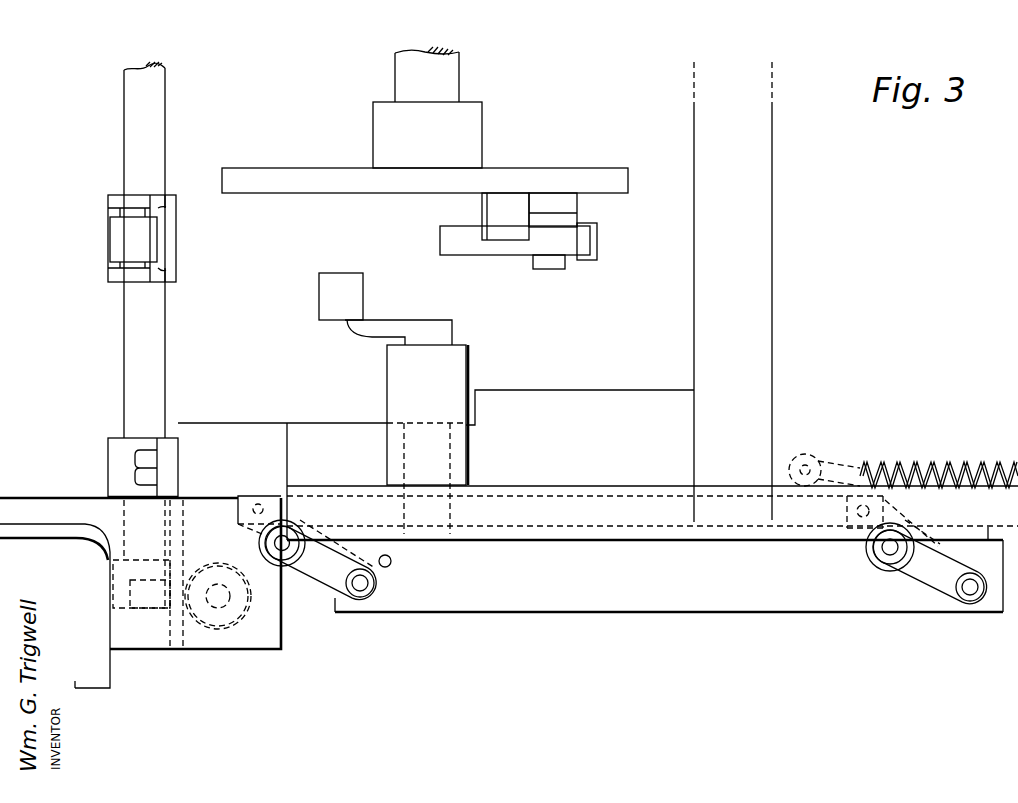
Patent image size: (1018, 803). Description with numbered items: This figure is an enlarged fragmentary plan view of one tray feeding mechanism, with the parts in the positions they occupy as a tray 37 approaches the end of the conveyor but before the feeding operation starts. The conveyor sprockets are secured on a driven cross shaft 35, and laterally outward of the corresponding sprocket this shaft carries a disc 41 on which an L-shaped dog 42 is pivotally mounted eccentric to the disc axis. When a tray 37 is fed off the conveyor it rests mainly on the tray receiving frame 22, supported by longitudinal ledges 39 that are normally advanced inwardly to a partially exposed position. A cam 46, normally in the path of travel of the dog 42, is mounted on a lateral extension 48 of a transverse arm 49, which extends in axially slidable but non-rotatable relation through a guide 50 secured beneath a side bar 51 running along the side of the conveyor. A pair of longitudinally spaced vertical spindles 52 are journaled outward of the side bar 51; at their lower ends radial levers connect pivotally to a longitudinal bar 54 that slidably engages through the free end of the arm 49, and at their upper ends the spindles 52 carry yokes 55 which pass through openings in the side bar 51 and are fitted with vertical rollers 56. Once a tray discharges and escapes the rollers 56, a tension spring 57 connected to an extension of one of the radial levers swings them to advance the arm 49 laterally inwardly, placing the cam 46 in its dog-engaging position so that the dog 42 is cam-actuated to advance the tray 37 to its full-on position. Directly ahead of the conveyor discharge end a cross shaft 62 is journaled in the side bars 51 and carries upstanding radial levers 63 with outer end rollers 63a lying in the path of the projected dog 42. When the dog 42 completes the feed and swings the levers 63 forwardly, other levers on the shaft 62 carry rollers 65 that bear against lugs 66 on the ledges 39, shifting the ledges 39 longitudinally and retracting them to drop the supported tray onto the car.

The tray receiving frame 22 is at (114, 668).
The cross shaft 35 is at (452, 72).
The tray 37 is at (742, 284).
The longitudinal ledges 39 is at (62, 508).
The disc 41 is at (538, 178).
The L-shaped dog 42 is at (458, 248).
The cam 46 is at (327, 308).
The lateral extension 48 is at (378, 330).
The transverse arm 49 is at (437, 342).
The guide 50 is at (457, 388).
The side bar 51 is at (570, 530).
The vertical spindles 52 is at (360, 590).
The longitudinal bar 54 is at (550, 497).
The yokes 55 is at (312, 566).
The vertical rollers 56 is at (258, 537).
The tension spring 57 is at (957, 468).
The cross shaft 62 is at (138, 338).
The upstanding radial levers 63 is at (125, 273).
The outer end rollers 63a is at (122, 239).
The rollers 65 is at (236, 622).
The lugs 66 is at (176, 614).